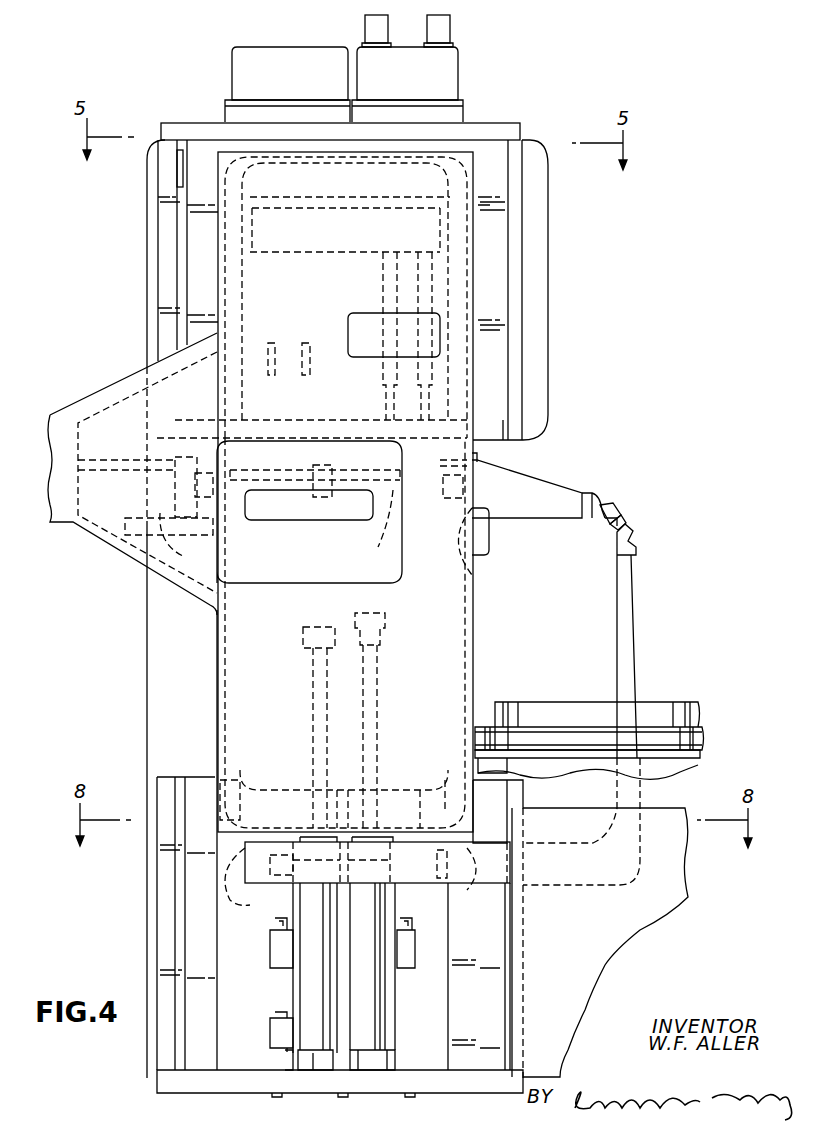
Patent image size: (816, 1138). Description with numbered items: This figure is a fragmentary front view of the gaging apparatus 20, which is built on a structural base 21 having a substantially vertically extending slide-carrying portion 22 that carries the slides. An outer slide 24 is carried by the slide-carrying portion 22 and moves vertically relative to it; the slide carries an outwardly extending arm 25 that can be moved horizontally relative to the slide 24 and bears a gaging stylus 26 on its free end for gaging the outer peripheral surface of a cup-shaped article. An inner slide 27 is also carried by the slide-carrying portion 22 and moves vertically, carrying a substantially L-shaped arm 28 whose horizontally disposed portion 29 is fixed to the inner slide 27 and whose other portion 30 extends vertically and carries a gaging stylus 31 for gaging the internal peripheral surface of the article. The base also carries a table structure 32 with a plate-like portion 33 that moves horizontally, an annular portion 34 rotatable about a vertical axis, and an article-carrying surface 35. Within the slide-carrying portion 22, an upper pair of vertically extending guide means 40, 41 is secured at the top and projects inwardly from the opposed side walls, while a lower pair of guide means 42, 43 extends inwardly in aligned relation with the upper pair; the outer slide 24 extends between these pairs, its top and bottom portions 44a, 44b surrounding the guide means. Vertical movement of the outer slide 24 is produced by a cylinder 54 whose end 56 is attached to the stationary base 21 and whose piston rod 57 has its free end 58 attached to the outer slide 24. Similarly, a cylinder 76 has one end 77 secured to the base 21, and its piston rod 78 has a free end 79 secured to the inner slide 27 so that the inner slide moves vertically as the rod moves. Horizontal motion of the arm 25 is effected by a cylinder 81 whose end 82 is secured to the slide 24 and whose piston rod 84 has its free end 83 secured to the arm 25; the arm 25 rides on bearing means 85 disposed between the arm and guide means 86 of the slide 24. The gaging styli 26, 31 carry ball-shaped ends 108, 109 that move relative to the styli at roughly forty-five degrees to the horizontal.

The gaging apparatus 20 is at (645, 286).
The structural base 21 is at (163, 668).
The slide-carrying portion 22 is at (213, 130).
The outer slide 24 is at (447, 645).
The outwardly extending arm 25 is at (510, 478).
The gaging stylus 26 is at (612, 510).
The inner slide 27 is at (367, 876).
The L-shaped arm 28 is at (617, 787).
The horizontally disposed portion 29 is at (467, 880).
The vertically extending portion 30 is at (638, 607).
The gaging stylus 31 is at (630, 548).
The table structure 32 is at (693, 672).
The plate-like portion 33 is at (695, 768).
The annular portion 34 is at (702, 705).
The article-carrying surface 35 is at (575, 702).
The upper guide means 40 is at (195, 253).
The upper guide means 41 is at (498, 290).
The lower guide means 42 is at (197, 898).
The lower guide means 43 is at (490, 945).
The top portion 44a is at (427, 167).
The bottom portion 44b is at (280, 800).
The cylinder 54 is at (375, 996).
The end 56 is at (377, 1040).
The piston rod 57 is at (380, 712).
The free end 58 is at (382, 632).
The cylinder 76 is at (310, 987).
The end 77 is at (322, 1053).
The piston rod 78 is at (313, 712).
The free end 79 is at (303, 650).
The cylinder 81 is at (273, 472).
The end 82 is at (230, 520).
The free end 83 is at (474, 455).
The piston rod 84 is at (375, 540).
The bearing means 85 is at (190, 517).
The guide means 86 is at (170, 543).
The ball-shaped end 108 is at (622, 520).
The ball-shaped end 109 is at (612, 524).